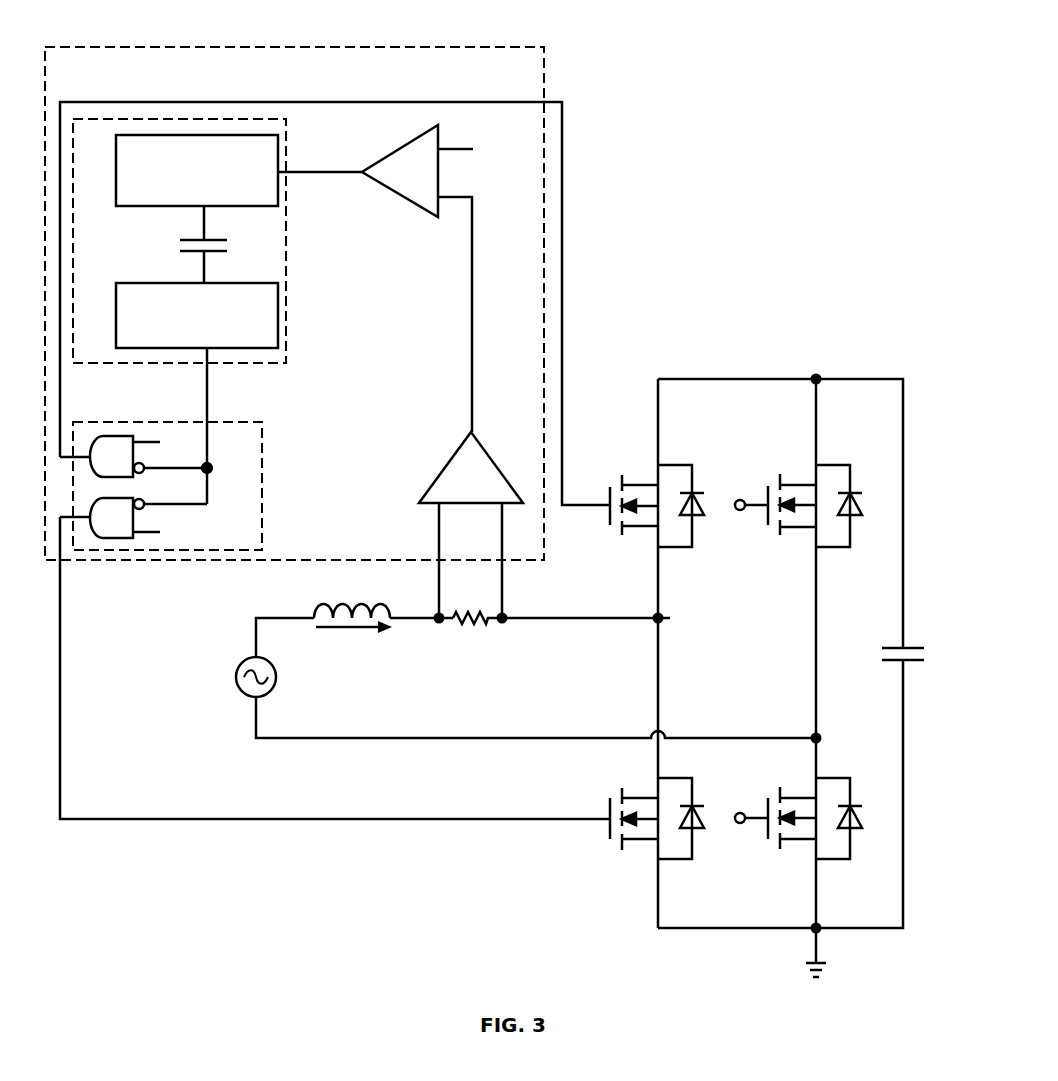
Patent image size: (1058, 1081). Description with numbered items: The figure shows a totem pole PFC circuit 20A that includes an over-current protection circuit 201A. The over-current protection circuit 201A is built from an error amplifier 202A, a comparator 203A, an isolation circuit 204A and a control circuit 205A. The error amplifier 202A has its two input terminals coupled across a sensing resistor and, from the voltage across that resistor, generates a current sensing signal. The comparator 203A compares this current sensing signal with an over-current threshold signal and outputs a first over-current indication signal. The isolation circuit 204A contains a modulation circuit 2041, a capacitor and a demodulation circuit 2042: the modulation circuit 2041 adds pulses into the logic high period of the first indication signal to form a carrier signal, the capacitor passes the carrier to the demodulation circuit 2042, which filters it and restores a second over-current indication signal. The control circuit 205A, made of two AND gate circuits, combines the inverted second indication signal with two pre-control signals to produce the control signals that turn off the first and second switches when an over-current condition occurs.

The totem pole PFC circuit 20A is at (818, 62).
The over-current protection circuit 201A is at (135, 81).
The error amplifier 202A is at (455, 445).
The comparator 203A is at (392, 192).
The isolation circuit 204A is at (286, 322).
The modulation circuit 2041 is at (162, 207).
The demodulation circuit 2042 is at (158, 283).
The control circuit 205A is at (262, 503).